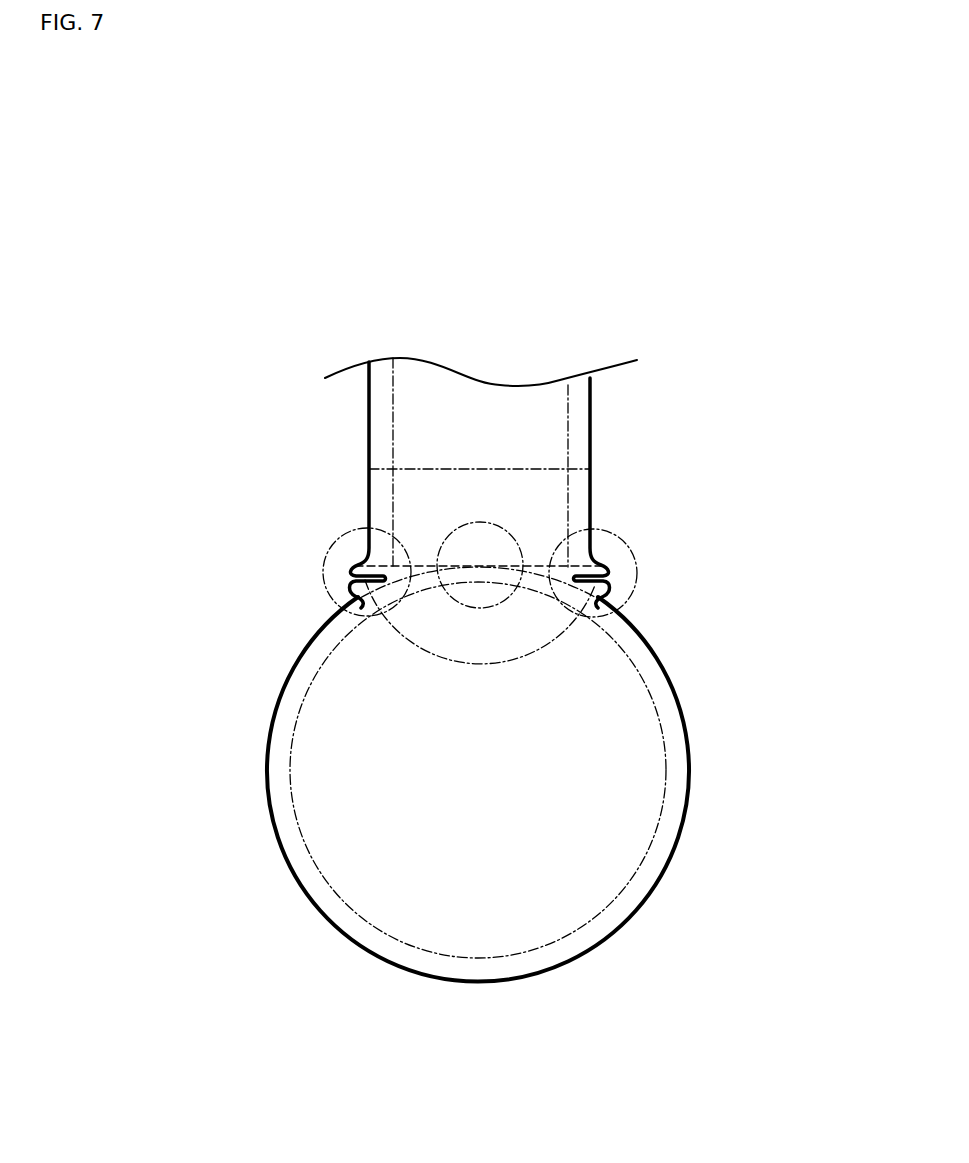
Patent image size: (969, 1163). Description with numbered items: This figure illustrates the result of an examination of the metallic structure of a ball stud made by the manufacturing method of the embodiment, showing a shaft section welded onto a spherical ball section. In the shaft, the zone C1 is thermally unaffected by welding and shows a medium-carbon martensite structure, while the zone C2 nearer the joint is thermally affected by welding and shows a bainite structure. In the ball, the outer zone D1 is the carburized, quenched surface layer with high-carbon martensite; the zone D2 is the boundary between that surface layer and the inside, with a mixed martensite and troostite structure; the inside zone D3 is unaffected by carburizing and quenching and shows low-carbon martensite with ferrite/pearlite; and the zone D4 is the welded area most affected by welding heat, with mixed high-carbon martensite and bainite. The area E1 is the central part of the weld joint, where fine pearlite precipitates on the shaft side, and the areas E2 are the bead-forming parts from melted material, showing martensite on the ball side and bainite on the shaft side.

The zone in the shaft section thermally unaffected by welding C1 is at (518, 442).
The zone in the shaft section thermally affected by welding C2 is at (525, 500).
The central part of the welding and joining E1 is at (447, 533).
The forming part of the bead E2 is at (327, 585).
The area of the carburized, quenched layer D1 is at (353, 922).
The boundary area between the carburized, quenched layer and inside D2 is at (610, 907).
The inside area unaffected by carburizing and quenching D3 is at (420, 778).
The welded area between the ball section and the shaft section D4 is at (507, 630).